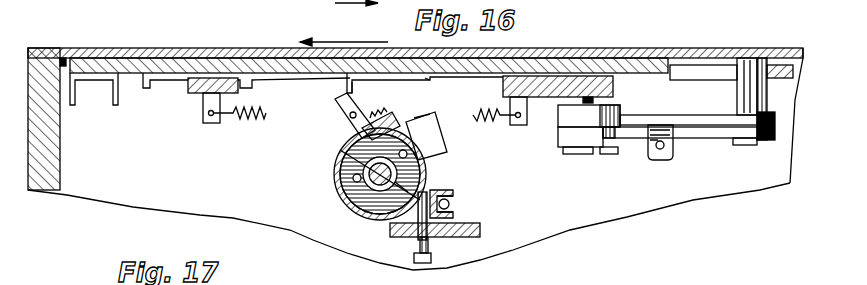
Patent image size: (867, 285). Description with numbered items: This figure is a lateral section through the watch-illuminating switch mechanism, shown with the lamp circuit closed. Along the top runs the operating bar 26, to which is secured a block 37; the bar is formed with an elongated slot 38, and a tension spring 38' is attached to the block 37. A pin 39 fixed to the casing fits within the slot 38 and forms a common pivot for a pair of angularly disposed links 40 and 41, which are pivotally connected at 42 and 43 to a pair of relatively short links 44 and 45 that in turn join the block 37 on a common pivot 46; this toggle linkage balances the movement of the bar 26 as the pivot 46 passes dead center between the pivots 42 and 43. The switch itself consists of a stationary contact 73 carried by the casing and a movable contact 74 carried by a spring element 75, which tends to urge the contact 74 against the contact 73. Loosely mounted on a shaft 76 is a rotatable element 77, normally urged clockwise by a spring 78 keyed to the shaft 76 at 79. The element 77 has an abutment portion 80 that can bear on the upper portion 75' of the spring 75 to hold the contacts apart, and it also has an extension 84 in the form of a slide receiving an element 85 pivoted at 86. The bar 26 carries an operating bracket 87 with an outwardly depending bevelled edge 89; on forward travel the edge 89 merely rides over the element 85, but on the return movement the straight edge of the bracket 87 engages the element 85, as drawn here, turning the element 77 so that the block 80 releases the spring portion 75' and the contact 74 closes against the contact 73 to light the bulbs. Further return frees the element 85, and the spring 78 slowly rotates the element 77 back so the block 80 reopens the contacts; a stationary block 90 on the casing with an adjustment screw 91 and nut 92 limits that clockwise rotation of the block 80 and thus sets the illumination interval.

The operating bar 26 is at (657, 58).
The block 37 is at (560, 62).
The elongated slot 38 is at (703, 54).
The tension spring 38' is at (366, 127).
The pin 39 is at (748, 80).
The link 40 is at (708, 118).
The link 41 is at (690, 132).
The pivot 42 is at (590, 78).
The pivot 43 is at (578, 150).
The short link 44 is at (615, 112).
The short link 45 is at (560, 150).
The common pivot 46 is at (608, 152).
The stationary contact 73 is at (455, 200).
The movable contact 74 is at (458, 207).
The spring element 75 is at (478, 210).
The upper portion of spring 75' is at (451, 201).
The shaft 76 is at (345, 192).
The rotatable element 77 is at (335, 170).
The spring 78 is at (372, 198).
The keying point 79 is at (428, 118).
The abutment portion 80 is at (440, 146).
The extension 84 is at (348, 120).
The element 85 is at (337, 100).
The pivot 86 is at (375, 118).
The operating bracket 87 is at (426, 78).
The bevelled edge 89 is at (355, 89).
The stationary block 90 is at (460, 237).
The adjustment screw 91 is at (392, 216).
The nut 92 is at (418, 252).